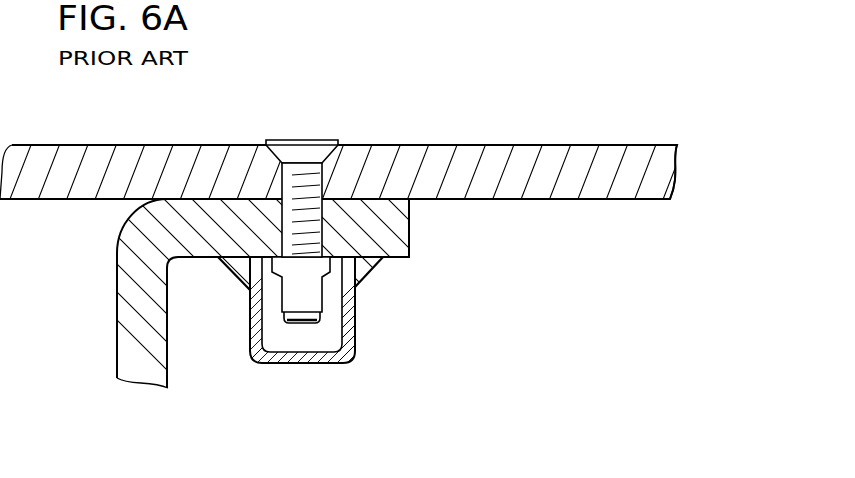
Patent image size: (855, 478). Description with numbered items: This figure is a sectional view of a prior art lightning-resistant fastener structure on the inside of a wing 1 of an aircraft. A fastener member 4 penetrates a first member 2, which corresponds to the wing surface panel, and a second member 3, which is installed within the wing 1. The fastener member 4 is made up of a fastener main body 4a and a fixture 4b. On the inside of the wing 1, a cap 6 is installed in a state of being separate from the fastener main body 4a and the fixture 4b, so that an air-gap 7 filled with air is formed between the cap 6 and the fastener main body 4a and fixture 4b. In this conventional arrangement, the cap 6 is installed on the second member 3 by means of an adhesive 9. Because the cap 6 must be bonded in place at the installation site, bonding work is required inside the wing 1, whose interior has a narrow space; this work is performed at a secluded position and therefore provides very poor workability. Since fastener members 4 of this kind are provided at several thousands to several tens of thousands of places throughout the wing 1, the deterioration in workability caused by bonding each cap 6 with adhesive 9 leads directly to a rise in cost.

The wing 1 is at (625, 157).
The first member 2 is at (650, 177).
The second member 3 is at (117, 350).
The fastener member 4 is at (303, 230).
The fastener main body 4a is at (338, 182).
The fixture 4b is at (293, 297).
The cap 6 is at (357, 343).
The air-gap 7 is at (346, 317).
The adhesive 9 is at (377, 267).